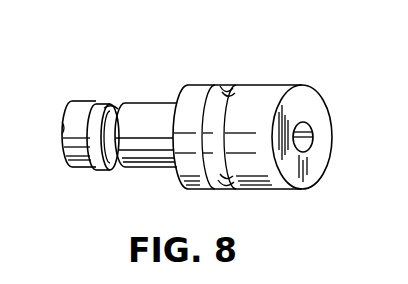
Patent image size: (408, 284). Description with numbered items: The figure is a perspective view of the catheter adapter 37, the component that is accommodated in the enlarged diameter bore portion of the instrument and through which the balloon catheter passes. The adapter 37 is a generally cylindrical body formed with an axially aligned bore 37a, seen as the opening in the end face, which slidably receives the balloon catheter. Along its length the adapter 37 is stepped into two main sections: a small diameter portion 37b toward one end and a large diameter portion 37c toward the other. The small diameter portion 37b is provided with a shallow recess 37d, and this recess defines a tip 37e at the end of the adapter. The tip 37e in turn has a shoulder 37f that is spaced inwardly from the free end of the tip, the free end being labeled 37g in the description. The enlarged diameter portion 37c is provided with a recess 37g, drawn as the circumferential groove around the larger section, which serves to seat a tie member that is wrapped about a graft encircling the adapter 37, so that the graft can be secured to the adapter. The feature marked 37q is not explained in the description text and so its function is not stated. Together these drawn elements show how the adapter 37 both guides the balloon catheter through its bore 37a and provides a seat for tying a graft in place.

The adapter 37 is at (310, 48).
The axially aligned bore 37a is at (312, 131).
The small diameter portion 37b is at (147, 103).
The large diameter portion 37c is at (258, 185).
The shallow recess 37d is at (117, 106).
The tip 37e is at (82, 172).
The shoulder 37f is at (114, 172).
The recess 37g is at (231, 87).
The end flange 37q is at (63, 128).